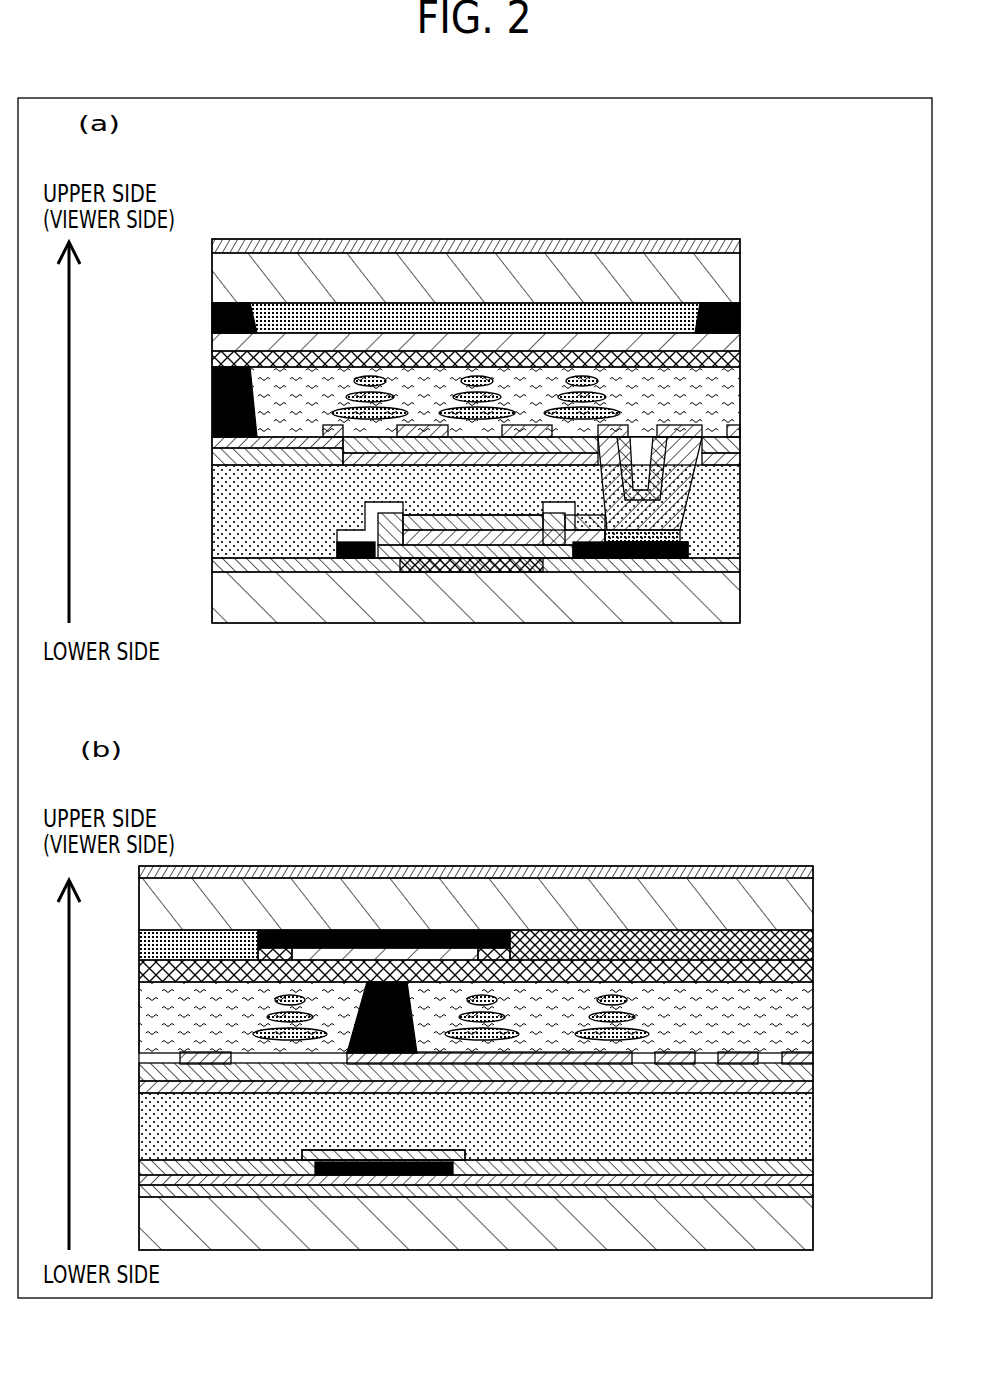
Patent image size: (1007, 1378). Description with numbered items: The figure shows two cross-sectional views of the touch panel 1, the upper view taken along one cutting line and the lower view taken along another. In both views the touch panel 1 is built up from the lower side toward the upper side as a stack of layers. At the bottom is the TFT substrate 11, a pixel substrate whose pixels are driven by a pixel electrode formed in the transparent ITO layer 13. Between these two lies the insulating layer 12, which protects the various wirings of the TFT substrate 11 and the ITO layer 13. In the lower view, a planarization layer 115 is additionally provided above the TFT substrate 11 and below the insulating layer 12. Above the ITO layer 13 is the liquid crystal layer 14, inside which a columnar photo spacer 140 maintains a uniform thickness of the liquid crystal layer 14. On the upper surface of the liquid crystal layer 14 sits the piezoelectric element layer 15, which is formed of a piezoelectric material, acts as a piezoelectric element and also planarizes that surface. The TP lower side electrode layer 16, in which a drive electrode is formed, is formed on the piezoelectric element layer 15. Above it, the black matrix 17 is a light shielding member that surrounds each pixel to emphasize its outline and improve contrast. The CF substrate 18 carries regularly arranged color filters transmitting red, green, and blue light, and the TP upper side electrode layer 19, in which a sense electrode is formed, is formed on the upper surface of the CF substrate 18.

The touch panel 1 is at (735, 178).
The TFT substrate 11 is at (742, 596).
The insulating layer 12 is at (742, 462).
The ITO layer 13 is at (742, 440).
The liquid crystal layer 14 is at (742, 403).
The piezoelectric element layer 15 is at (742, 366).
The TP lower side electrode layer 16 is at (742, 344).
The black matrix 17 is at (210, 314).
The CF substrate 18 is at (742, 282).
The TP upper side electrode layer 19 is at (742, 246).
The planarization layer 115 is at (815, 1128).
The photo spacer 140 is at (210, 402).